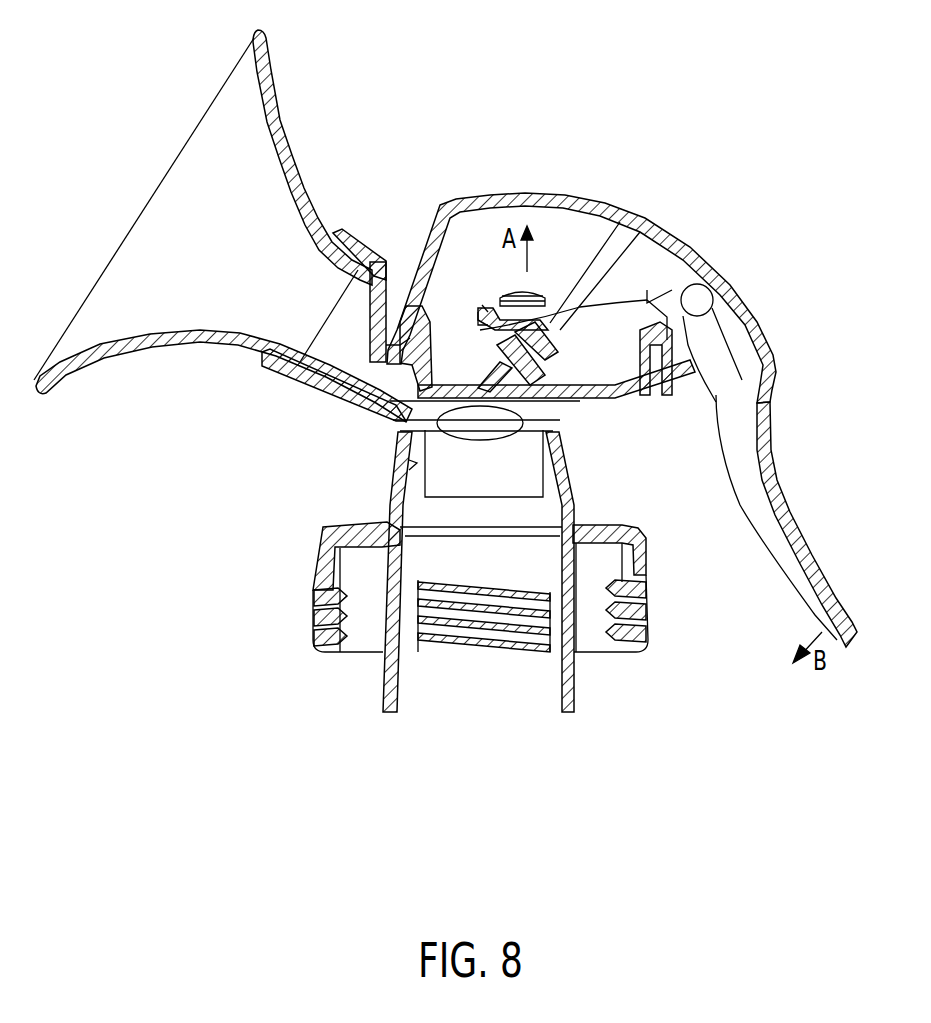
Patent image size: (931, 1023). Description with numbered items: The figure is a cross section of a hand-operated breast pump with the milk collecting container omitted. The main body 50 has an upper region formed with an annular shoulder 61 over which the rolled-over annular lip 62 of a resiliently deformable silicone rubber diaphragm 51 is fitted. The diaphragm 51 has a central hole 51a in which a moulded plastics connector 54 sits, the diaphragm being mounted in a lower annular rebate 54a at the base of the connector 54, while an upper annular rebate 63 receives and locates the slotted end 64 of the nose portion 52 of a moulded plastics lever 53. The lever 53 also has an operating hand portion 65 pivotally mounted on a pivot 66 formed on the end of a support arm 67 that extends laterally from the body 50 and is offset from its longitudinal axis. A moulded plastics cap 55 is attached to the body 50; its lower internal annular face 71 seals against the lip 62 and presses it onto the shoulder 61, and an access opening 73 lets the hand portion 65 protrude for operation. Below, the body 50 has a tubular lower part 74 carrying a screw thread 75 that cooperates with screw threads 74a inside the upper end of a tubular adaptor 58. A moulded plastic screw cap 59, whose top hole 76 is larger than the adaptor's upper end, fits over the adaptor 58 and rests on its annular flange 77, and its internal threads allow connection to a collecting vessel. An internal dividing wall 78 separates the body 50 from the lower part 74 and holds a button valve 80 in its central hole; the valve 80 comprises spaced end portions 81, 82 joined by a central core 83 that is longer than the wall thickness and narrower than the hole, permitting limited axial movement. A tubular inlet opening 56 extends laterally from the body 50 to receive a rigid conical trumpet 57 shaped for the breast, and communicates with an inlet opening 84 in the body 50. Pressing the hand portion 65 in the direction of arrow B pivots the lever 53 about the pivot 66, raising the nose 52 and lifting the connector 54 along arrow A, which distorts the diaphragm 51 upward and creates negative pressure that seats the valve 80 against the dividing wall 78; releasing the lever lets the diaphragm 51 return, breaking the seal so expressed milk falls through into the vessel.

The body 50 is at (623, 422).
The diaphragm 51 is at (475, 385).
The central hole 51a is at (478, 372).
The nose portion 52 is at (590, 255).
The lever 53 is at (705, 257).
The connector 54 is at (537, 287).
The lower annular rebate 54a is at (560, 403).
The cap 55 is at (503, 195).
The tubular inlet opening 56 is at (340, 240).
The conical trumpet 57 is at (268, 70).
The tubular adaptor 58 is at (383, 695).
The screw cap 59 is at (645, 633).
The annular shoulder 61 is at (630, 353).
The annular lip 62 is at (690, 395).
The upper annular rebate 63 is at (592, 302).
The slotted end 64 is at (507, 298).
The operating hand portion 65 is at (800, 540).
The pivot 66 is at (713, 297).
The support arm 67 is at (695, 405).
The lower internal annular face 71 is at (382, 278).
The access opening 73 is at (598, 258).
The tubular lower part 74 is at (412, 445).
The screw threads 74a is at (401, 467).
The screw thread 75 is at (410, 487).
The hole 76 is at (578, 527).
The annular flange 77 is at (335, 540).
The internal dividing wall 78 is at (362, 398).
The button valve 80 is at (450, 442).
The end portion 81 is at (490, 440).
The end portion 82 is at (493, 430).
The central core 83 is at (495, 440).
The inlet opening 84 is at (368, 384).